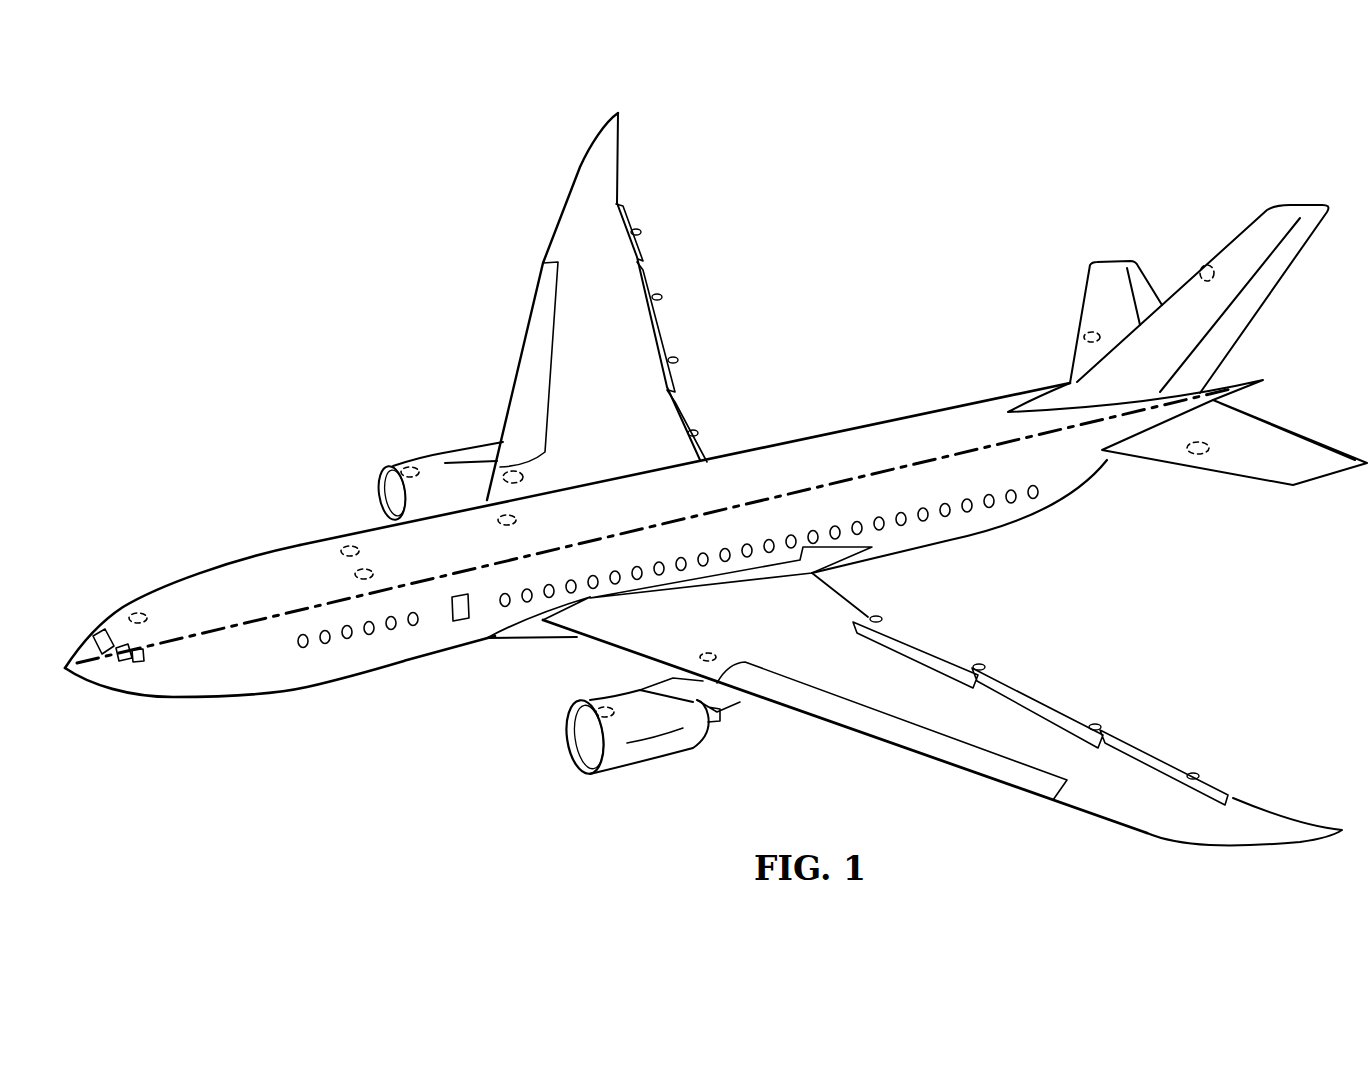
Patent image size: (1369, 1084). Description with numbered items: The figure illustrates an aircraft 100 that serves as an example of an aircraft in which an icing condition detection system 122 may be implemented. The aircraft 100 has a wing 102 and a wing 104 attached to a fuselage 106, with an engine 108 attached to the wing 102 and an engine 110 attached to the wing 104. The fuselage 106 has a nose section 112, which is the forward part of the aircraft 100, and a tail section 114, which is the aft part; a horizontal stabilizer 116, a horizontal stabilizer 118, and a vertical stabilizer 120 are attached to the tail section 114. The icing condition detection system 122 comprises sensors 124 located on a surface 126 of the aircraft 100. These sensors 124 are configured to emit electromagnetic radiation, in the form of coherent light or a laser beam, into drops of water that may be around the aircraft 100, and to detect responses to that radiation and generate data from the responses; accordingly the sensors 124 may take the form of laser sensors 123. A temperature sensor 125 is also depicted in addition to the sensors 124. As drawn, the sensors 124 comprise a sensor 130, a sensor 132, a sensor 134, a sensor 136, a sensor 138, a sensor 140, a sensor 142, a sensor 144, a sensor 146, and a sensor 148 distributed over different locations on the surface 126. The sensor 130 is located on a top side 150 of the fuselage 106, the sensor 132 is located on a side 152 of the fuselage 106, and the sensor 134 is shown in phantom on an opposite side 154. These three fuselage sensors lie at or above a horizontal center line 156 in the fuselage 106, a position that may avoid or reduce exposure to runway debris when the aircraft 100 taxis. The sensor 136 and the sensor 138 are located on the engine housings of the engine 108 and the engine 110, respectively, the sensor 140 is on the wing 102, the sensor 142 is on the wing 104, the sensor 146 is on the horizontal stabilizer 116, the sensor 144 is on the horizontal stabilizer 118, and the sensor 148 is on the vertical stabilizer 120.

The aircraft 100 is at (320, 378).
The wing 102 is at (617, 150).
The wing 104 is at (1103, 817).
The fuselage 106 is at (227, 559).
The engine 108 is at (420, 452).
The engine 110 is at (650, 763).
The nose section 112 is at (107, 740).
The tail section 114 is at (1202, 525).
The horizontal stabilizer 116 is at (1087, 282).
The horizontal stabilizer 118 is at (1260, 477).
The vertical stabilizer 120 is at (1243, 338).
The icing condition detection system 122 is at (717, 358).
The laser sensors 123 is at (633, 493).
The sensors 124 is at (868, 660).
The temperature sensor 125 is at (518, 520).
The surface 126 is at (792, 634).
The sensor 130 is at (148, 618).
The sensor 132 is at (370, 570).
The sensor 134 is at (341, 552).
The sensor 136 is at (398, 467).
The sensor 138 is at (600, 705).
The sensor 140 is at (525, 478).
The sensor 142 is at (703, 650).
The sensor 144 is at (1182, 449).
The sensor 146 is at (1080, 343).
The sensor 148 is at (1198, 268).
The top side 150 is at (270, 555).
The side 152 is at (367, 657).
The side 154 is at (327, 534).
The horizontal center line 156 is at (737, 506).